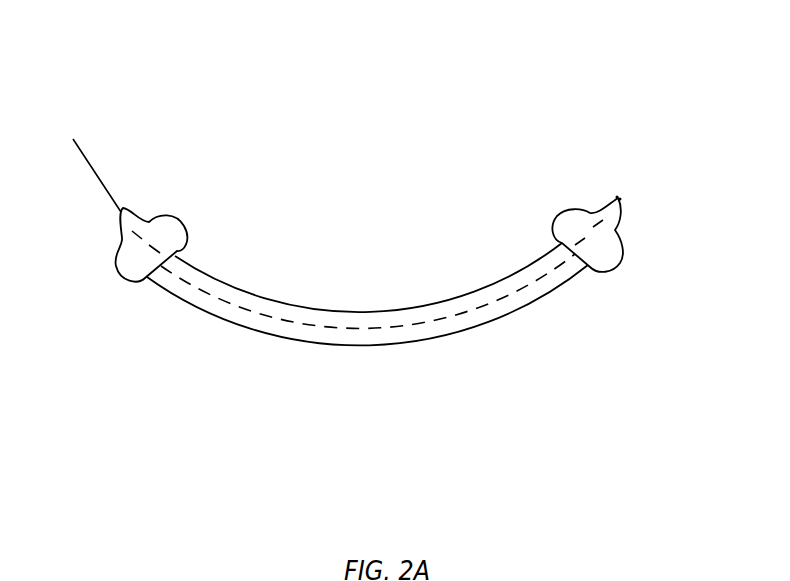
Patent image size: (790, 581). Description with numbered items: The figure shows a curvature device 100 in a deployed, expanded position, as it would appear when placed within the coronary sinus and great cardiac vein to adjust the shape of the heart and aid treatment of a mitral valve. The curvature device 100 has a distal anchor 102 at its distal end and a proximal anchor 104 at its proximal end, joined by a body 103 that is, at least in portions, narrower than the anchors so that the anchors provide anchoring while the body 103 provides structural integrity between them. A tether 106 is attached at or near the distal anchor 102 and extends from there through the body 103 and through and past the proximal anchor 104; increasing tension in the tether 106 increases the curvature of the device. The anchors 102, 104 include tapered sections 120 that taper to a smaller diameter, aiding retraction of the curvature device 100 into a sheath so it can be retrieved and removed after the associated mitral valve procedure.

The curvature device 100 is at (194, 72).
The distal anchor 102 is at (565, 212).
The body 103 is at (490, 288).
The proximal anchor 104 is at (132, 265).
The tether 106 is at (87, 162).
The tapered section 120 is at (148, 221).